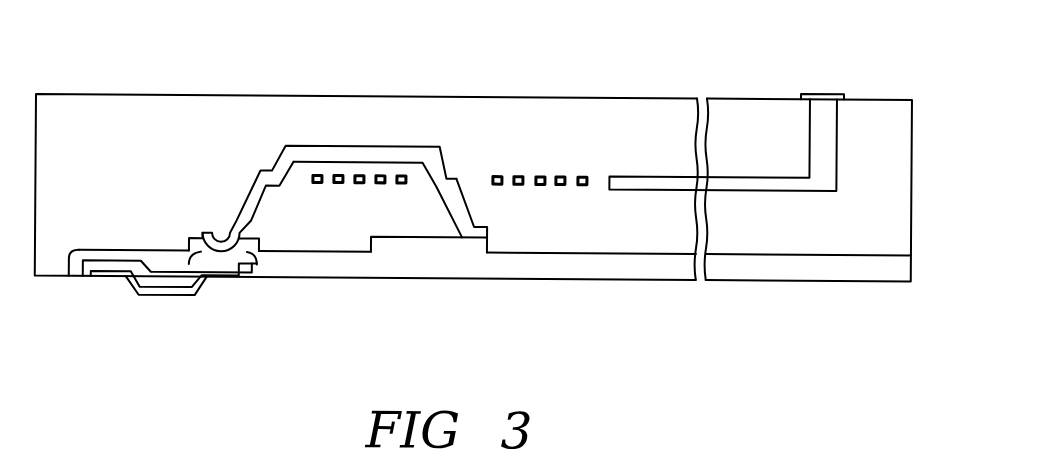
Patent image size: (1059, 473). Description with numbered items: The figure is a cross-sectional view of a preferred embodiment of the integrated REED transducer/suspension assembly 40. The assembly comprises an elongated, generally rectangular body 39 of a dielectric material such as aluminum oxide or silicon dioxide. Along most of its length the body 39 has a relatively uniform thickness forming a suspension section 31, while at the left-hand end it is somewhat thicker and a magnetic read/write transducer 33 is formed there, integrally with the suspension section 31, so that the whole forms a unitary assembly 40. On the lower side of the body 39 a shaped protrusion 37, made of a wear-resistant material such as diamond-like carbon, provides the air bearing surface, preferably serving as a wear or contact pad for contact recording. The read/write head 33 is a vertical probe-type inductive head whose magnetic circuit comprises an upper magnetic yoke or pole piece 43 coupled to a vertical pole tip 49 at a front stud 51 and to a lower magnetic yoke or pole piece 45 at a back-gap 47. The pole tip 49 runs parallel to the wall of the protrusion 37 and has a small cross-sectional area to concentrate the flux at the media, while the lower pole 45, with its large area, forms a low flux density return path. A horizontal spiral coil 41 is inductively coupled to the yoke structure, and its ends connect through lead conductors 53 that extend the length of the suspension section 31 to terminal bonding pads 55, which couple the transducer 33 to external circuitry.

The suspension section 31 is at (703, 84).
The read/write transducer 33 is at (265, 145).
The shaped protrusion 37 is at (135, 297).
The body 39 is at (565, 93).
The integrated REED transducer/suspension assembly 40 is at (598, 308).
The horizontal spiral coil 41 is at (407, 172).
The upper magnetic yoke 43 is at (357, 144).
The lower magnetic yoke 45 is at (413, 244).
The back-gap 47 is at (488, 244).
The vertical pole tip 49 is at (198, 287).
The front stud 51 is at (228, 261).
The lead conductors 53 is at (758, 188).
The terminal bonding pads 55 is at (820, 89).